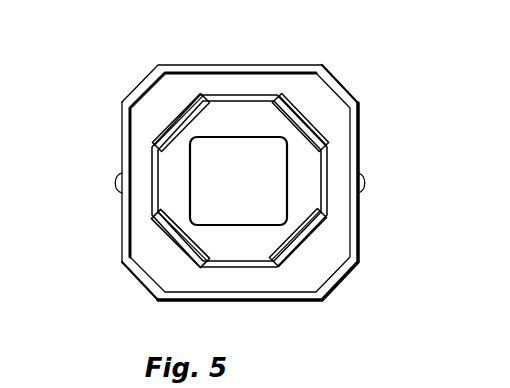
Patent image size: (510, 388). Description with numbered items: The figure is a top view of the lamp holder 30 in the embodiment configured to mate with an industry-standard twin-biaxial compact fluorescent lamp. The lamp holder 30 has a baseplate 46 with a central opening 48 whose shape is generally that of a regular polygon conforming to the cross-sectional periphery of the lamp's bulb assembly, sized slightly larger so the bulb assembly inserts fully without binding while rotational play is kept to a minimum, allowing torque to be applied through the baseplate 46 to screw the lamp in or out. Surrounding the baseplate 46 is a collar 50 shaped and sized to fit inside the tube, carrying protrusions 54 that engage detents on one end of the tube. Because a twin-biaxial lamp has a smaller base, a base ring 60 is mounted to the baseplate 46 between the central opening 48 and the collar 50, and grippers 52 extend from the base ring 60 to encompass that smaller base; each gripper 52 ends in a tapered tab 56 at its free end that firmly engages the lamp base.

The lamp holder 30 is at (86, 35).
The baseplate 46 is at (243, 127).
The central opening 48 is at (244, 213).
The collar 50 is at (123, 145).
The grippers 52 is at (172, 236).
The protrusion 54 is at (113, 184).
The tapered tab 56 is at (293, 240).
The base ring 60 is at (325, 168).